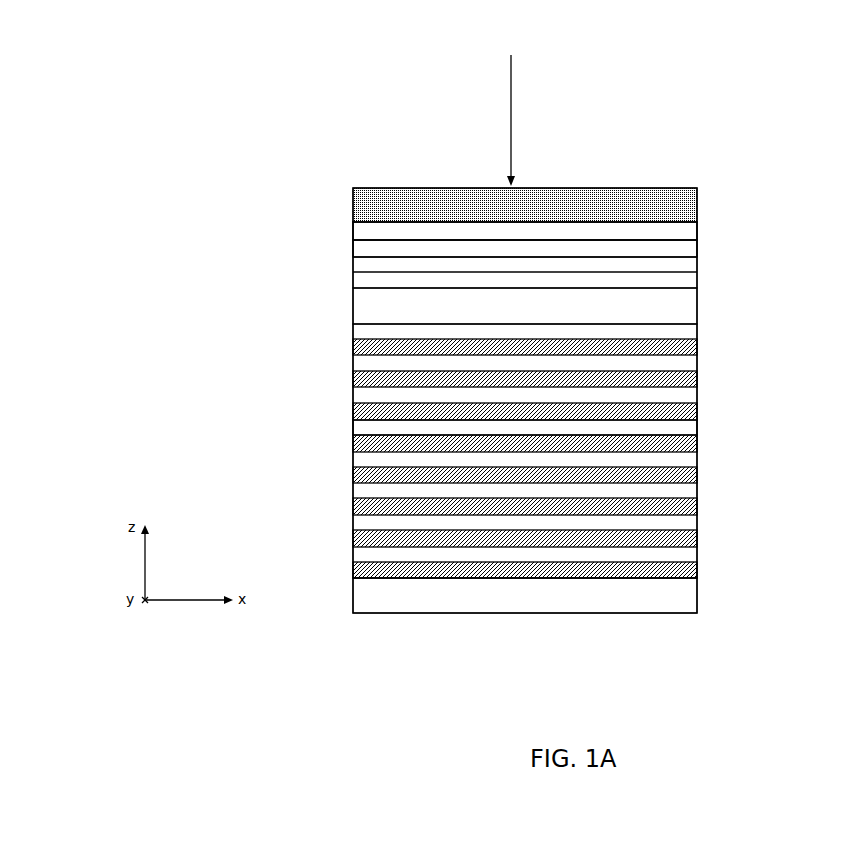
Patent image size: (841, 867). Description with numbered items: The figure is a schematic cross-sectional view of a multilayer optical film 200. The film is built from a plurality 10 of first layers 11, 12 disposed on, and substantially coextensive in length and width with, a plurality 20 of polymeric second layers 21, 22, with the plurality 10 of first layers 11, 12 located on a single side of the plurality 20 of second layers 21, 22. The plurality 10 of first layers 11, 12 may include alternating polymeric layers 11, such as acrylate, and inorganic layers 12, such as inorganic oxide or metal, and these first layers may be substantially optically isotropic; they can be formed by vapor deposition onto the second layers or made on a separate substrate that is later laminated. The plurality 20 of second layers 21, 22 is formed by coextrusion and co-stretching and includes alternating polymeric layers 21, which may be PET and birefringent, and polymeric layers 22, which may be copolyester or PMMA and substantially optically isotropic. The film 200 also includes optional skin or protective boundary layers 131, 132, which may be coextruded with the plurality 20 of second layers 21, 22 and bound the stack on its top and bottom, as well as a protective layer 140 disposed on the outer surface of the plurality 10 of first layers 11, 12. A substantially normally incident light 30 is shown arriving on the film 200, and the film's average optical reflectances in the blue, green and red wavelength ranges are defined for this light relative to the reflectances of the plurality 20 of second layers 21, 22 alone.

The multilayer optical film 200 is at (282, 127).
The substantially normally incident light 30 is at (512, 84).
The protective layer 140 is at (672, 202).
The plurality of first layers 10 is at (340, 221).
The first layer 11 is at (688, 230).
The first layer 12 is at (690, 248).
The protective boundary layer 132 is at (683, 305).
The plurality of polymeric second layers 20 is at (340, 322).
The polymeric layer 21 is at (688, 424).
The polymeric layer 22 is at (688, 443).
The protective boundary layer 131 is at (683, 595).